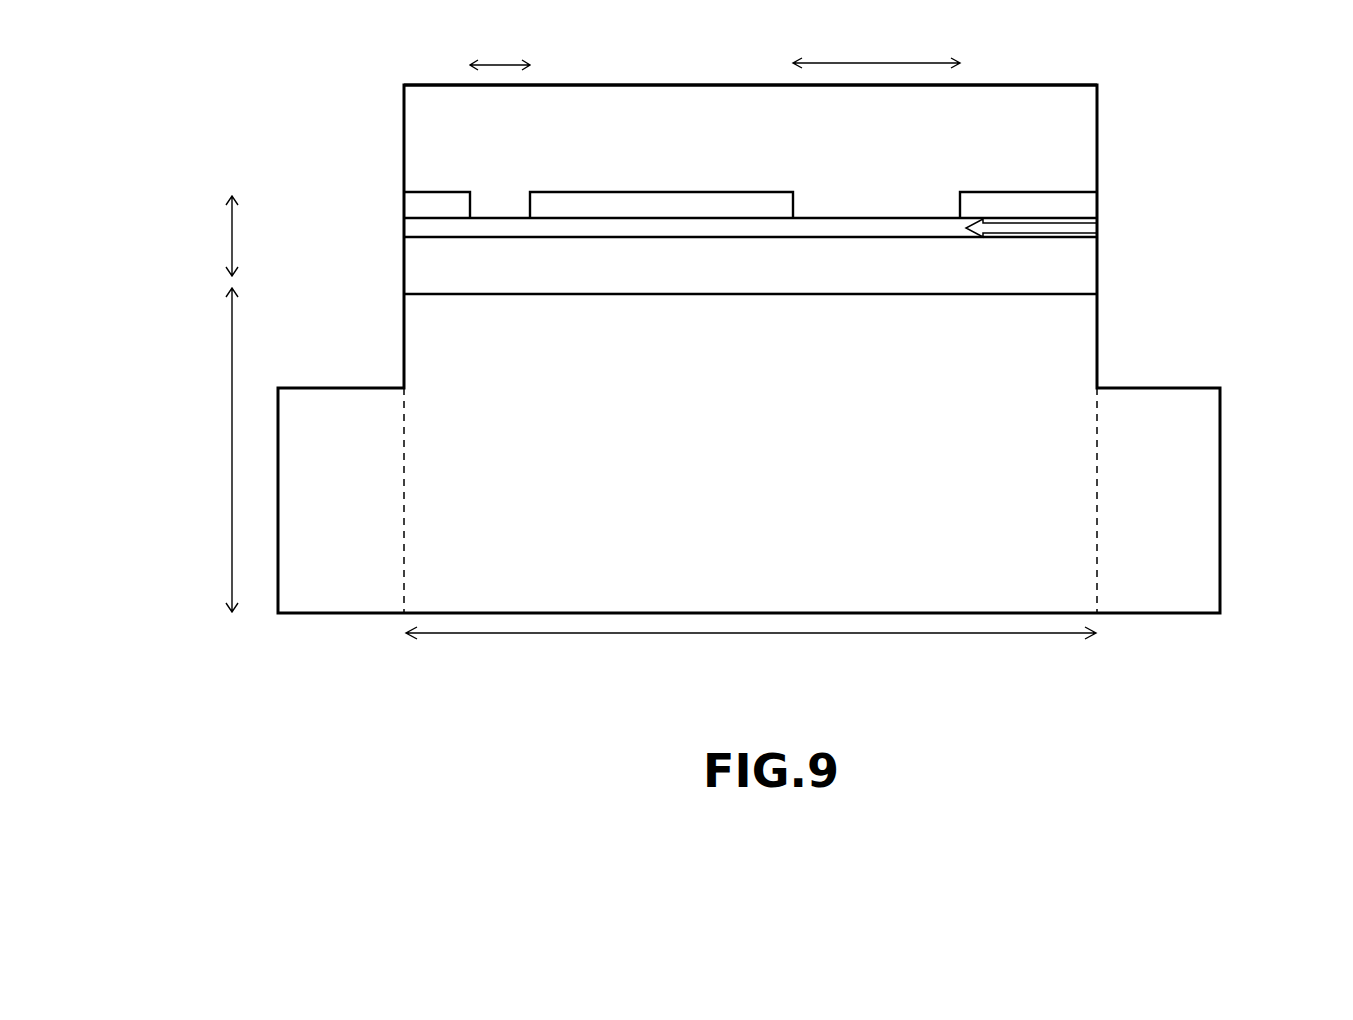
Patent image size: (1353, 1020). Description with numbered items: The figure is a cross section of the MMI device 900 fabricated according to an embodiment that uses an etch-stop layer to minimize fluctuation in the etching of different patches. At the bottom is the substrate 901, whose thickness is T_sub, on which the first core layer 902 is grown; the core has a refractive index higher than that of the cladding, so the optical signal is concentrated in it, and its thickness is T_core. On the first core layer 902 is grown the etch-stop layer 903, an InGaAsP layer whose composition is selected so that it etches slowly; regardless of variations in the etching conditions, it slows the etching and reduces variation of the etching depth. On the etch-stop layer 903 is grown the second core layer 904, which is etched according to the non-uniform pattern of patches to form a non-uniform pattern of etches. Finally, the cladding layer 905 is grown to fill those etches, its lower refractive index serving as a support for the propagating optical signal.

The MMI device 900 is at (723, 433).
The substrate 901 is at (1220, 453).
The first core layer 902 is at (1097, 273).
The etch-stop layer 903 is at (1097, 222).
The second core layer 904 is at (404, 210).
The cladding layer 905 is at (1097, 158).